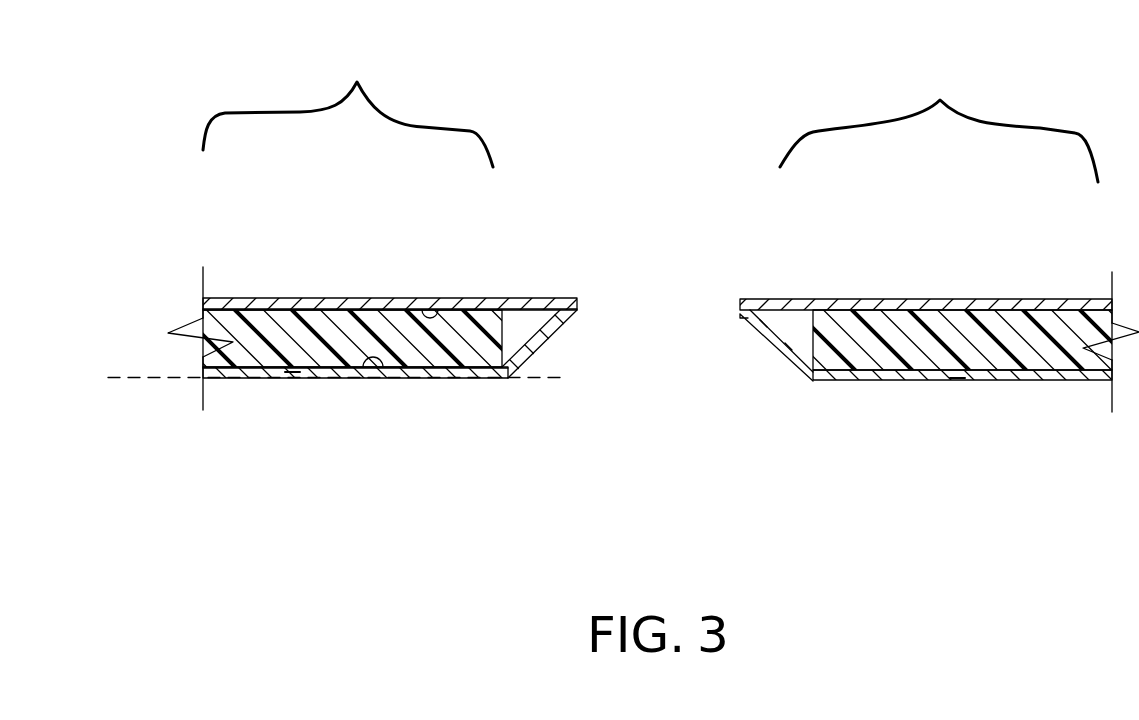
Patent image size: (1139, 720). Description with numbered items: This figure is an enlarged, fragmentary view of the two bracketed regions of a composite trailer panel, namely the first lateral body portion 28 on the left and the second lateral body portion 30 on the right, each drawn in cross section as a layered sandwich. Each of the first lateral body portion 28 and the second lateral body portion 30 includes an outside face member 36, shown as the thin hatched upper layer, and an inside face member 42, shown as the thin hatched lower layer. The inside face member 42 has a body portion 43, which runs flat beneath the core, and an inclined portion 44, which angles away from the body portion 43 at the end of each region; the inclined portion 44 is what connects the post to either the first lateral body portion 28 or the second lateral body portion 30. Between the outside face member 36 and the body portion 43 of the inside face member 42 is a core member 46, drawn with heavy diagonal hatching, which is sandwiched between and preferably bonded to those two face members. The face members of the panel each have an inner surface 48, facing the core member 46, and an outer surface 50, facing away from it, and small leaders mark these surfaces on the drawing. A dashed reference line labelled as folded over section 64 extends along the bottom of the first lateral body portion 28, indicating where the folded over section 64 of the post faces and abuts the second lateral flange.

The first lateral body portion 28 is at (330, 215).
The second lateral body portion 30 is at (959, 227).
The outside face member 36 is at (230, 298).
The inside face member 42 is at (240, 380).
The body portion 43 is at (290, 372).
The inclined portion 44 is at (545, 348).
The core member 46 is at (440, 350).
The inner surface 48 is at (447, 320).
The outer surface 50 is at (405, 300).
The folded over section 64 is at (137, 377).